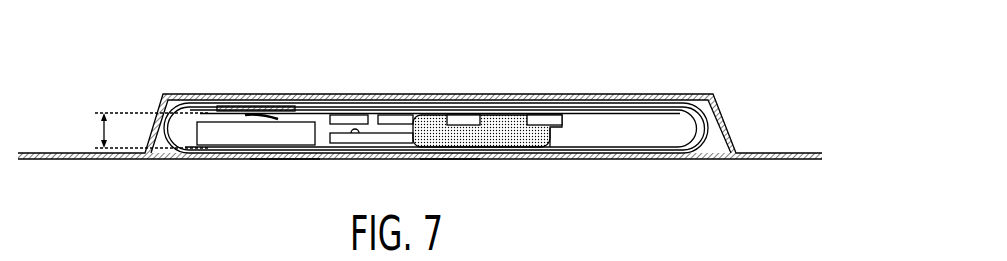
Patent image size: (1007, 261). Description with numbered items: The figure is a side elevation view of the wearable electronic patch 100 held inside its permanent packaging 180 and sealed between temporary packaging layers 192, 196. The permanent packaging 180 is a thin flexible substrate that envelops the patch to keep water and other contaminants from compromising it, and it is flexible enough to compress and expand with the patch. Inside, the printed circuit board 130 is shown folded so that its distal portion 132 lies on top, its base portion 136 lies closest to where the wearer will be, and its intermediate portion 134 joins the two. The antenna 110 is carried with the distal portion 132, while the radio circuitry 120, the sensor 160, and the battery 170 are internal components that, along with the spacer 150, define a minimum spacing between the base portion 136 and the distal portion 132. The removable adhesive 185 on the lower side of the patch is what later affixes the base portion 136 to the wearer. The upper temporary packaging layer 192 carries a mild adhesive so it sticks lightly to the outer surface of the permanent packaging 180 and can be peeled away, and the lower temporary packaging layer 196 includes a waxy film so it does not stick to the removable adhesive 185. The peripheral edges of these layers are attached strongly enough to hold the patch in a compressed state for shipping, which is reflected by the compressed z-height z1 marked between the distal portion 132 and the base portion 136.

The wearable electronic patch 100 is at (750, 51).
The antenna 110 is at (283, 106).
The radio circuitry 120 is at (353, 115).
The printed circuit board 130 is at (418, 150).
The distal portion 132 is at (612, 110).
The intermediate portion 134 is at (698, 148).
The base portion 136 is at (627, 143).
The spacer 150 is at (550, 138).
The sensor 160 is at (354, 136).
The battery 170 is at (276, 142).
The permanent packaging 180 is at (162, 148).
The removable adhesive 185 is at (282, 160).
The upper temporary packaging layer 192 is at (439, 94).
The lower temporary packaging layer 196 is at (448, 160).
The compressed z-height z1 is at (145, 130).